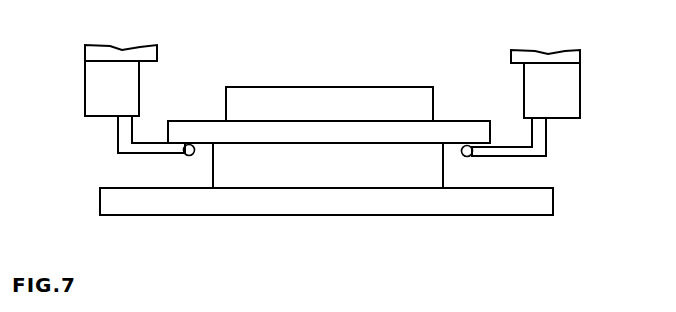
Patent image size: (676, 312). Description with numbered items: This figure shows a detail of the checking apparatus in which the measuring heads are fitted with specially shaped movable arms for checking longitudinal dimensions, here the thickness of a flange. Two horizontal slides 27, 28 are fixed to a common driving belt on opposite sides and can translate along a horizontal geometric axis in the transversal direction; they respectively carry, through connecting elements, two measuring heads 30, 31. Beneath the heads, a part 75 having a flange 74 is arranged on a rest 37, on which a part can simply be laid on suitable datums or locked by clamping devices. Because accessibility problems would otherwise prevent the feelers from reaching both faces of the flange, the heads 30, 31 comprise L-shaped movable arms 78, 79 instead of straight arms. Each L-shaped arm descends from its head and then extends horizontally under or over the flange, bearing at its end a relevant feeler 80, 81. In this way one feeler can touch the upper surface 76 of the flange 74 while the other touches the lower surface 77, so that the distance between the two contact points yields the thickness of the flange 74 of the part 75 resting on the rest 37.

The horizontal slide 27 is at (97, 53).
The horizontal slide 28 is at (572, 57).
The measuring head 30 is at (103, 88).
The measuring head 31 is at (565, 90).
The rest 37 is at (123, 202).
The flange 74 is at (427, 135).
The part 75 is at (305, 73).
The upper surface 76 is at (188, 116).
The lower surface 77 is at (205, 150).
The L-shaped movable arm 78 is at (125, 132).
The L-shaped movable arm 79 is at (540, 135).
The feeler 80 is at (184, 153).
The feeler 81 is at (468, 157).